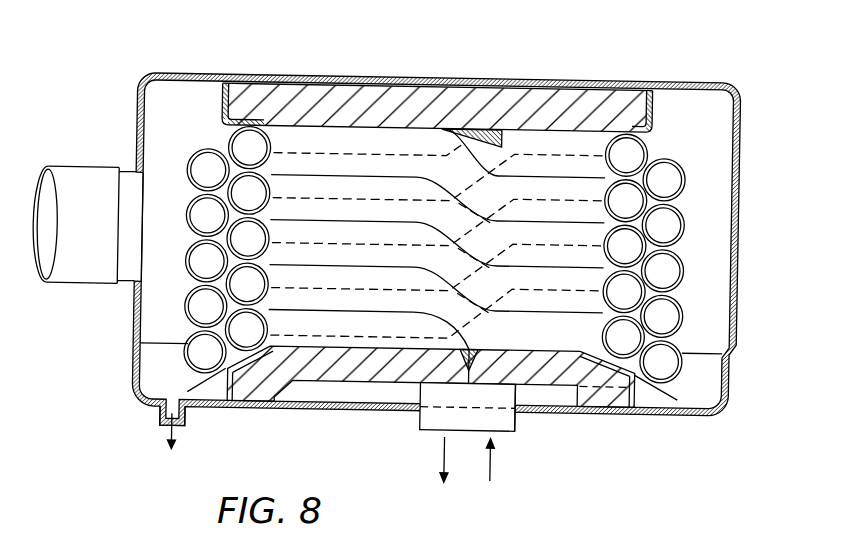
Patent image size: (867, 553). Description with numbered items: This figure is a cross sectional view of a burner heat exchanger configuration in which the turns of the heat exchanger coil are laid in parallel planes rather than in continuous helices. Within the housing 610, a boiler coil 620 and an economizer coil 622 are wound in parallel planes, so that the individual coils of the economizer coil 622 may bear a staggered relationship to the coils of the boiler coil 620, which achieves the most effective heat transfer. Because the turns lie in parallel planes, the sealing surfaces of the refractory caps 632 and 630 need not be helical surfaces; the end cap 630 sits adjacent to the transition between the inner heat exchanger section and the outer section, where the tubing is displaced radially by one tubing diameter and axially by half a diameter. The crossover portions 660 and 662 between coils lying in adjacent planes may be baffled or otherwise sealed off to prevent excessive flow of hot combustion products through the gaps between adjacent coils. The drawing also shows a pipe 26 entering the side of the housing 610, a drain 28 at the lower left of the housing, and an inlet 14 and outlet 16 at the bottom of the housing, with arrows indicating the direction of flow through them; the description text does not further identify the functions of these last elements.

The housing 610 is at (147, 81).
The end cap 630 is at (342, 129).
The refractory cap 632 is at (340, 352).
The boiler coil 620 is at (650, 144).
The economizer coil 622 is at (709, 200).
The crossover portion 660 is at (472, 346).
The crossover portion 662 is at (497, 141).
The inlet pipe 26 is at (91, 290).
The drain 28 is at (163, 425).
The outlet 16 is at (423, 416).
The inlet 14 is at (523, 421).